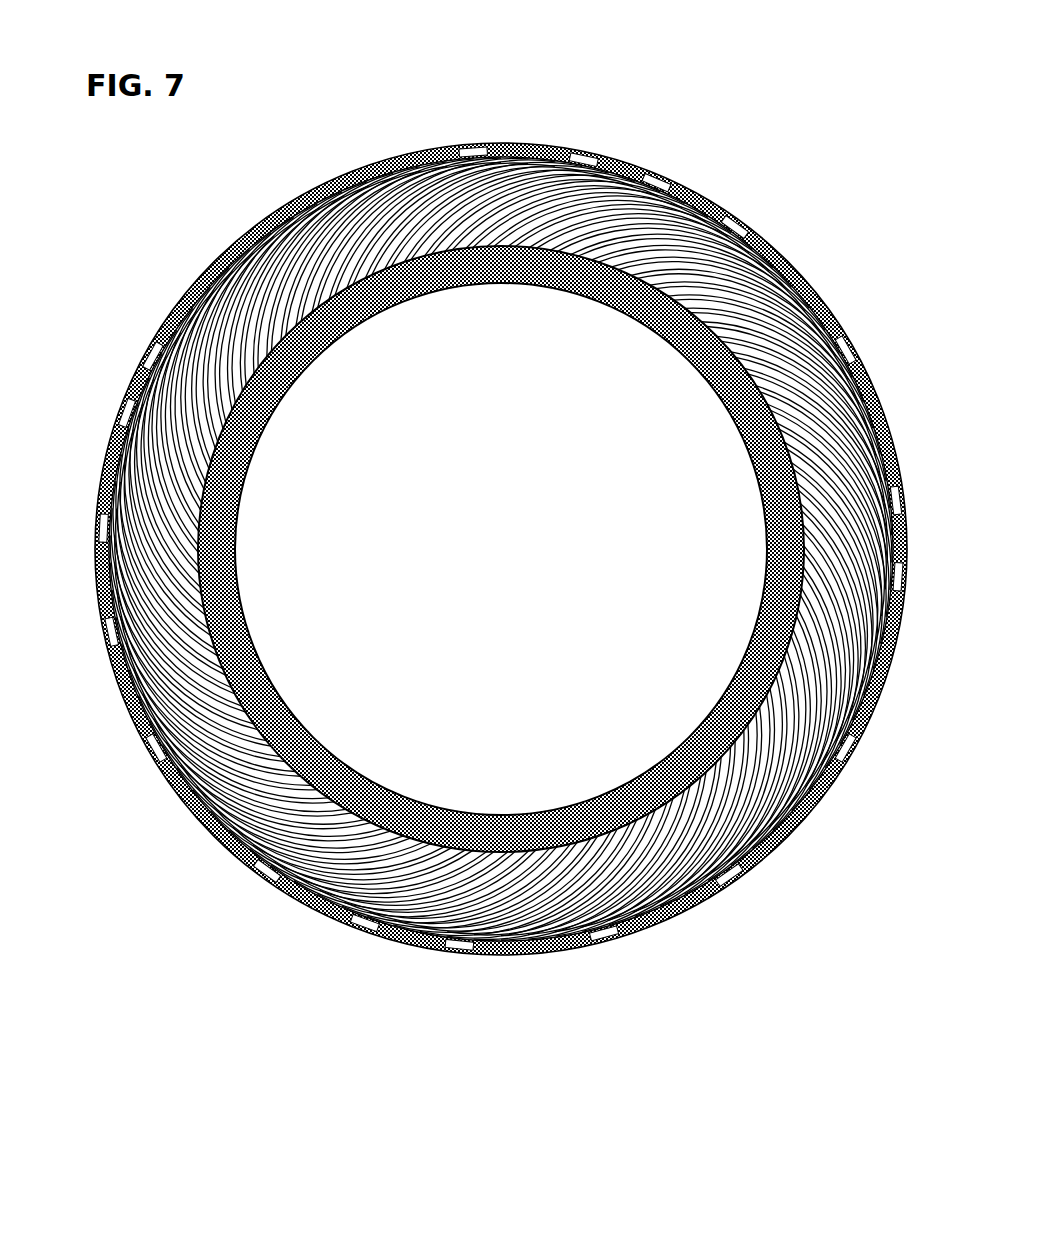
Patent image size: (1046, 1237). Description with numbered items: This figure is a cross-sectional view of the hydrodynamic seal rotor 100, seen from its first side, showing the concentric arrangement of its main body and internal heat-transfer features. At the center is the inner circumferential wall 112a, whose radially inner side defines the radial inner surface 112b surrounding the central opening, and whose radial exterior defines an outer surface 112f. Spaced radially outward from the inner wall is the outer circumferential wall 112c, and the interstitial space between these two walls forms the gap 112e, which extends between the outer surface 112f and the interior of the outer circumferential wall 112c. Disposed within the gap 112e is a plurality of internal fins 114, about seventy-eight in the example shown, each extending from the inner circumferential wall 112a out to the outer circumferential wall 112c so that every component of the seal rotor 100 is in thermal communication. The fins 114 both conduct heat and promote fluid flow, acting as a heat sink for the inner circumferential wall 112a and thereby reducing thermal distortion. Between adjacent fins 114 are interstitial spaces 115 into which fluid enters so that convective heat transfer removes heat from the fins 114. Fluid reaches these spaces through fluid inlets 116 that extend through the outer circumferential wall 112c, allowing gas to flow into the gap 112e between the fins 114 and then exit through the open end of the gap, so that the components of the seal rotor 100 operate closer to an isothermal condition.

The seal rotor 100 is at (155, 917).
The inner circumferential wall 112a is at (488, 290).
The radial inner surface 112b is at (695, 738).
The outer circumferential wall 112c is at (718, 213).
The gap 112e is at (826, 404).
The outer surface 112f is at (355, 222).
The internal fins 114 is at (478, 212).
The interstitial spaces 115 is at (159, 460).
The fluid inlets 116 is at (207, 275).